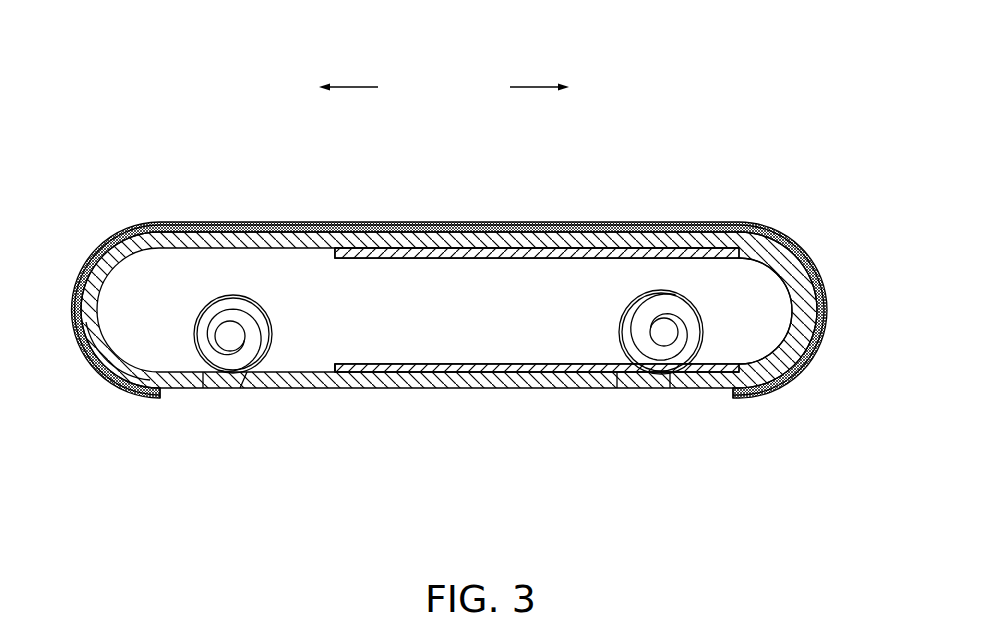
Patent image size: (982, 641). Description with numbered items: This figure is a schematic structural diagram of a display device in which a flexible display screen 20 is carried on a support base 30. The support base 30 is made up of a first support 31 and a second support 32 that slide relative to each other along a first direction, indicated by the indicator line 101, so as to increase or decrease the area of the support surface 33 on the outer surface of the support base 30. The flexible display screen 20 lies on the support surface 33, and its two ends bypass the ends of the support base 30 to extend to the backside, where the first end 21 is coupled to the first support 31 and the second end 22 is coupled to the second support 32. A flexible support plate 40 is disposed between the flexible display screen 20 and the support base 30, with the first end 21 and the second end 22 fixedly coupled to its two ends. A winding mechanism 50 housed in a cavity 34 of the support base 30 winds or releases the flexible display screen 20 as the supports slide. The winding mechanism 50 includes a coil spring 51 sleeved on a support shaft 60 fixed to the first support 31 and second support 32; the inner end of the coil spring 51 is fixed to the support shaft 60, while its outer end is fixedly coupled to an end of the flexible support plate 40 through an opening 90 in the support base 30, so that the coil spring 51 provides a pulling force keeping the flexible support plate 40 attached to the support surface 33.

The indicator line 101 is at (362, 87).
The support base 30 is at (128, 200).
The flexible display screen 20 is at (230, 231).
The flexible support plate 40 is at (279, 229).
The support surface 33 is at (386, 247).
The cavity 34 is at (751, 302).
The winding mechanism 50 is at (636, 285).
The coil spring 51 is at (196, 312).
The support shaft 60 is at (229, 336).
The first end 21 is at (160, 412).
The second end 22 is at (735, 412).
The first support 31 is at (188, 388).
The second support 32 is at (708, 389).
The opening 90 is at (257, 389).